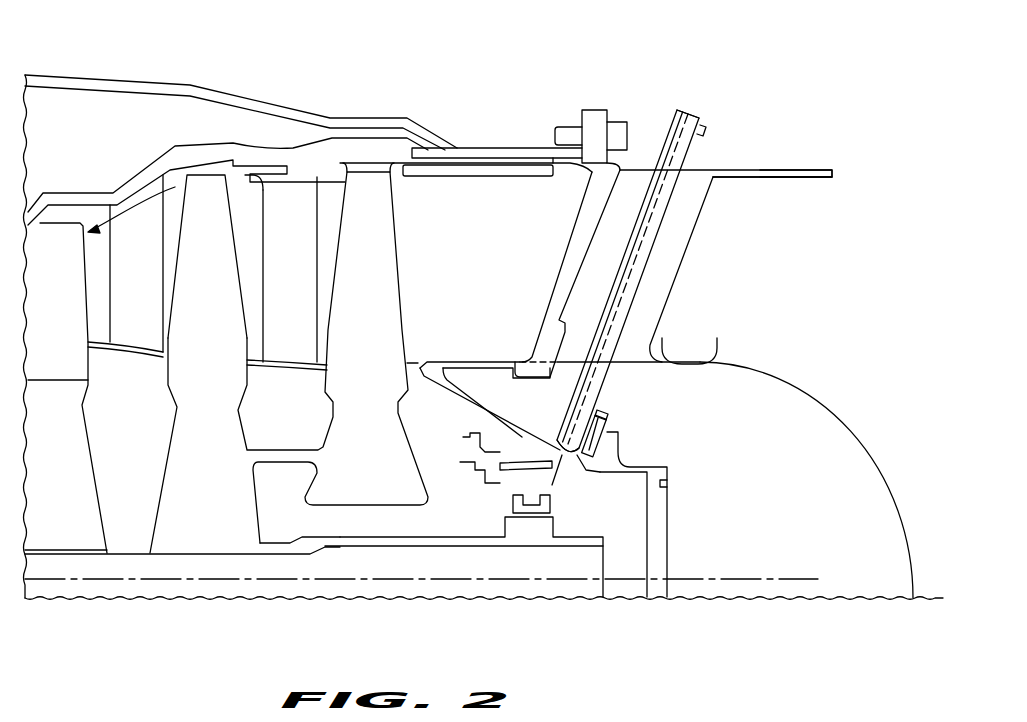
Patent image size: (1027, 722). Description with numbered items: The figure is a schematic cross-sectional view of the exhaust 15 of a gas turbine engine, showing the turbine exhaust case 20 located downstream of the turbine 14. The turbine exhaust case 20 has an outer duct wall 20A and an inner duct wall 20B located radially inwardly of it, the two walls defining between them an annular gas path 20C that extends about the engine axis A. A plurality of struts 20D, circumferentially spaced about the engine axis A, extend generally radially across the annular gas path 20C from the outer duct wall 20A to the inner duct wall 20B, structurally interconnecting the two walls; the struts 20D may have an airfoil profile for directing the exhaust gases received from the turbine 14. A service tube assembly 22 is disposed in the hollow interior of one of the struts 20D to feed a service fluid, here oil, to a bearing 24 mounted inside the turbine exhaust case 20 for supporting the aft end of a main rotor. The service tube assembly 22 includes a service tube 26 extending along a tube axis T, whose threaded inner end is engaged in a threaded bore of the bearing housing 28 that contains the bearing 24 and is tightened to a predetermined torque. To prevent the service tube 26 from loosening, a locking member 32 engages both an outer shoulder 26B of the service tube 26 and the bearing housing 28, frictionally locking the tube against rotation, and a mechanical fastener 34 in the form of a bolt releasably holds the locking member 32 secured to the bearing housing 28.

The turbine 14 is at (190, 128).
The exhaust 15 is at (830, 168).
The turbine exhaust case 20 is at (777, 168).
The outer duct wall 20A is at (808, 180).
The inner duct wall 20B is at (478, 360).
The annular gas path 20C is at (512, 270).
The struts 20D is at (693, 264).
The service tube assembly 22 is at (640, 110).
The tube axis T is at (683, 112).
The bearing 24 is at (558, 489).
The service tube 26 is at (683, 195).
The outer shoulder 26B is at (562, 435).
The bearing housing 28 is at (608, 457).
The locking member 32 is at (613, 427).
The mechanical fastener 34 is at (613, 413).
The engine axis A is at (805, 582).